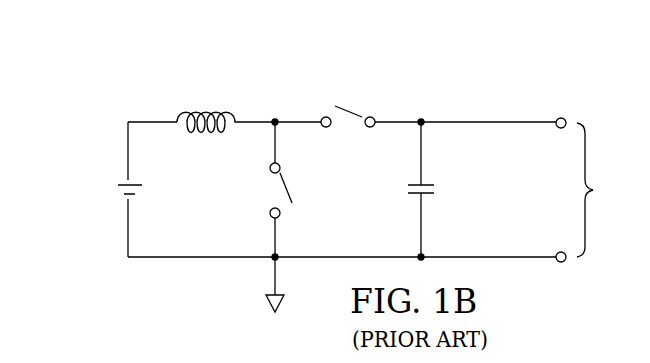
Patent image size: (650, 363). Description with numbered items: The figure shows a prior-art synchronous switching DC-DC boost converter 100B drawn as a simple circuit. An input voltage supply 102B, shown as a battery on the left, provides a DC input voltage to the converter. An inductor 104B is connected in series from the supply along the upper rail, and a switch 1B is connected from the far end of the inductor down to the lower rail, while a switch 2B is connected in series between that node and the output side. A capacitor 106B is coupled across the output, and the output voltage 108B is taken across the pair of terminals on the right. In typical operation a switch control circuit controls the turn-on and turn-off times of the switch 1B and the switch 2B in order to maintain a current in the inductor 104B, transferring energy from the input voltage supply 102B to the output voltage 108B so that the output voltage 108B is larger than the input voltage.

The synchronous switching DC-DC boost converter 100B is at (545, 67).
The input voltage supply 102B is at (118, 190).
The inductor 104B is at (210, 112).
The switch 2B is at (350, 112).
The switch 1B is at (285, 187).
The capacitor 106B is at (434, 192).
The output voltage 108B is at (603, 190).